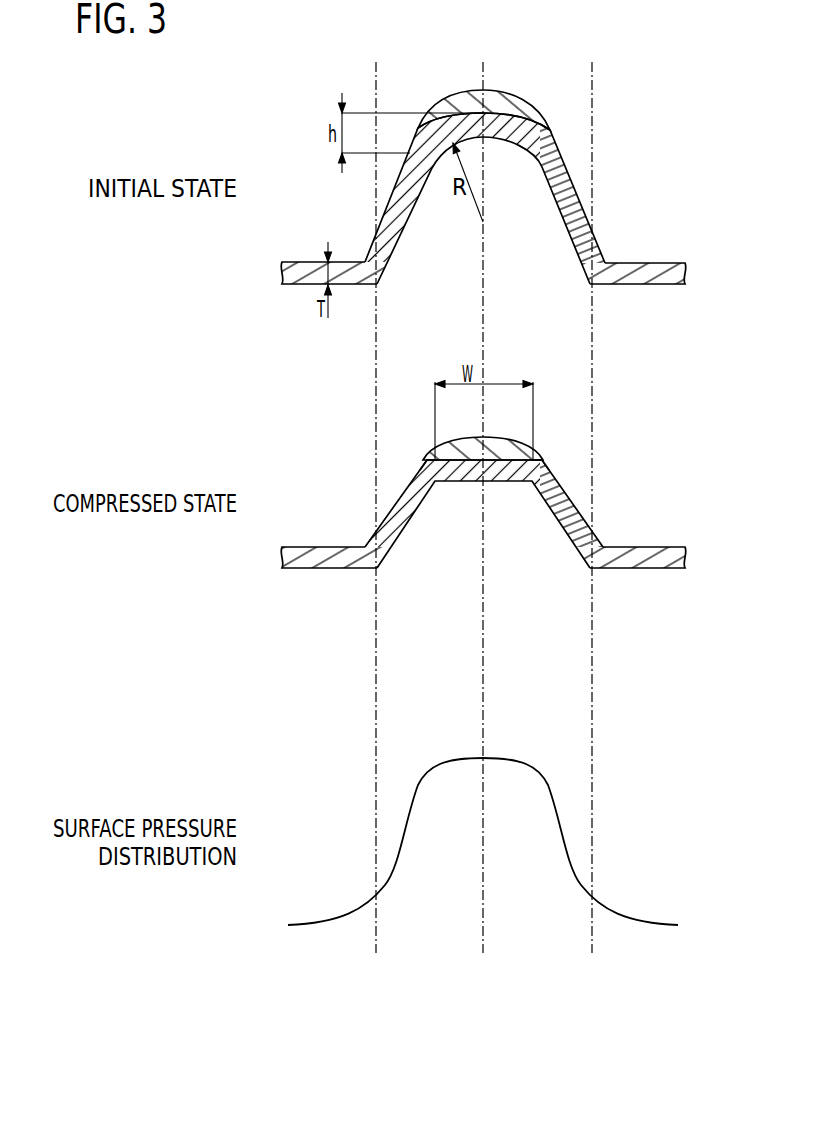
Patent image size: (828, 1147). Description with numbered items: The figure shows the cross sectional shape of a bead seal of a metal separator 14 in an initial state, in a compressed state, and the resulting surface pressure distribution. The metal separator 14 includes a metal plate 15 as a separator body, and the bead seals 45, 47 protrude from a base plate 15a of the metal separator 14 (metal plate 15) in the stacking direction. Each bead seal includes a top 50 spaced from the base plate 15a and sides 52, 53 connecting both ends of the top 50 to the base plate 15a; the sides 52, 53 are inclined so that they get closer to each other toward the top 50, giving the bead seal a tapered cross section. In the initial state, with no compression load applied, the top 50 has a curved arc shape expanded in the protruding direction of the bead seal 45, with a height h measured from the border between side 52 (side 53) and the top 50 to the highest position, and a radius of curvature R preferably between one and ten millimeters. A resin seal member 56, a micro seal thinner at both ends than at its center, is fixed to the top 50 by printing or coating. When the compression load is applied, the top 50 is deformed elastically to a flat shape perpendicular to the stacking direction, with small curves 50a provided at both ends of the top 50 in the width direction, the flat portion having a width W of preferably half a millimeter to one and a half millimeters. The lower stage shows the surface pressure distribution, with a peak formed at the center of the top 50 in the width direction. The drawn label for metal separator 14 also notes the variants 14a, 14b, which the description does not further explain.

The metal separator 14 is at (430, 317).
The first gasket 14a is at (430, 317).
The second gasket 14b is at (305, 162).
The metal plate 15 is at (302, 262).
The base plate 15a is at (650, 270).
The bead seal 45 is at (513, 317).
The bead seal 47 is at (560, 155).
The top 50 is at (494, 130).
The small curves 50a is at (422, 460).
The side 52 is at (393, 212).
The side 53 is at (563, 187).
The resin seal member 56 is at (525, 110).